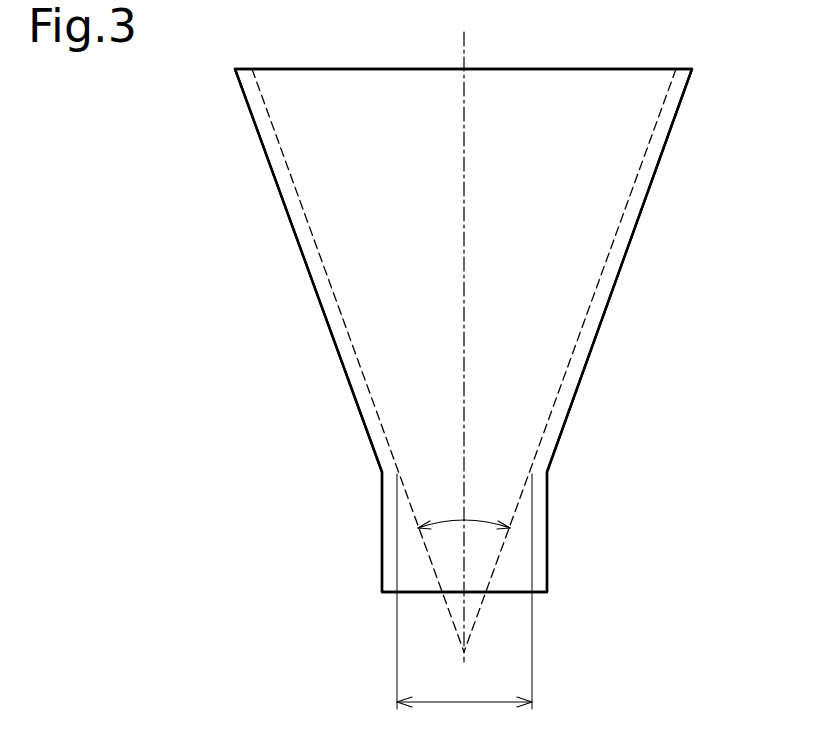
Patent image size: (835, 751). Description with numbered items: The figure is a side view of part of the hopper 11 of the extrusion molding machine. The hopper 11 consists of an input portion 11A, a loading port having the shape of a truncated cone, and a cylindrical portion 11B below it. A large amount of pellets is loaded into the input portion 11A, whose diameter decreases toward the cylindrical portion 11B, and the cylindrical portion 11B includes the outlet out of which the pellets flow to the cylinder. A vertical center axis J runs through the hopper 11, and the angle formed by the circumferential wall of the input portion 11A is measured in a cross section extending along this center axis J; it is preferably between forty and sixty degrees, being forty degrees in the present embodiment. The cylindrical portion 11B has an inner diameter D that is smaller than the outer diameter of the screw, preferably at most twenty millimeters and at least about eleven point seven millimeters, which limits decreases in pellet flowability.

The hopper 11 is at (745, 92).
The input portion 11A is at (637, 228).
The cylindrical portion 11B is at (547, 508).
The center axis J is at (465, 50).
The inner diameter D is at (464, 591).